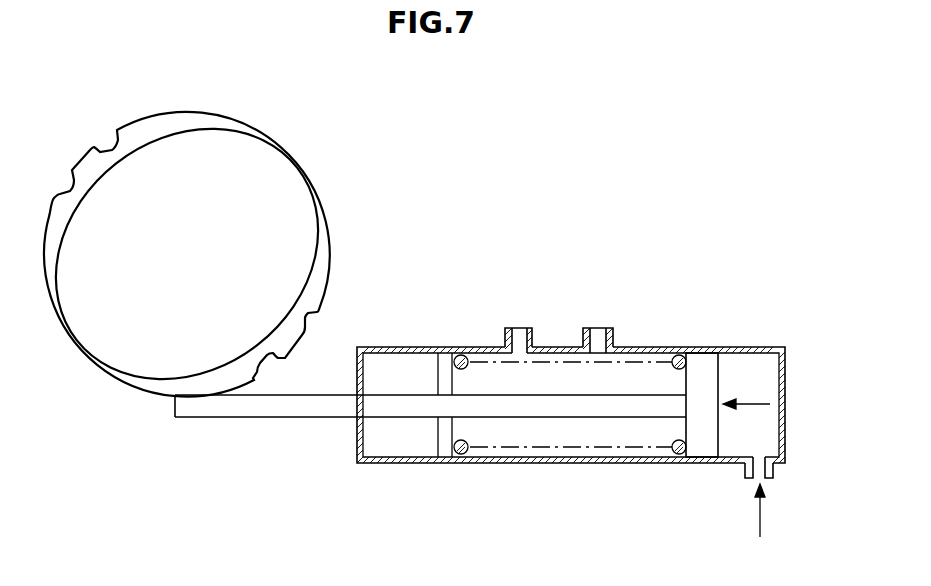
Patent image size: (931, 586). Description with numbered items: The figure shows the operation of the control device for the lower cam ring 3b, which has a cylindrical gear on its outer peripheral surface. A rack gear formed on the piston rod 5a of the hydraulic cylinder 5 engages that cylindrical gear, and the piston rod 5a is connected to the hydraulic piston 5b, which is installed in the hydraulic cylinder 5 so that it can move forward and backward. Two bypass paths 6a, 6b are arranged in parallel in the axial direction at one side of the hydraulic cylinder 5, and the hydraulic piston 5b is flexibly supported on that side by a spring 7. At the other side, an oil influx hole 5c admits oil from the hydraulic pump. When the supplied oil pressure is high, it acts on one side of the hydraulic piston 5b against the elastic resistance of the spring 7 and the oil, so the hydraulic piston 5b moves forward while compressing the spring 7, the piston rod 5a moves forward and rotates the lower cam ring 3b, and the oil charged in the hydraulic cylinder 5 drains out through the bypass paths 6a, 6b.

The lower cam ring 3b is at (314, 187).
The hydraulic cylinder 5 is at (508, 463).
The piston rod 5a is at (267, 420).
The hydraulic piston 5b is at (702, 362).
The oil influx hole 5c is at (776, 471).
The bypass path 6a is at (504, 334).
The bypass path 6b is at (615, 332).
The spring 7 is at (590, 447).